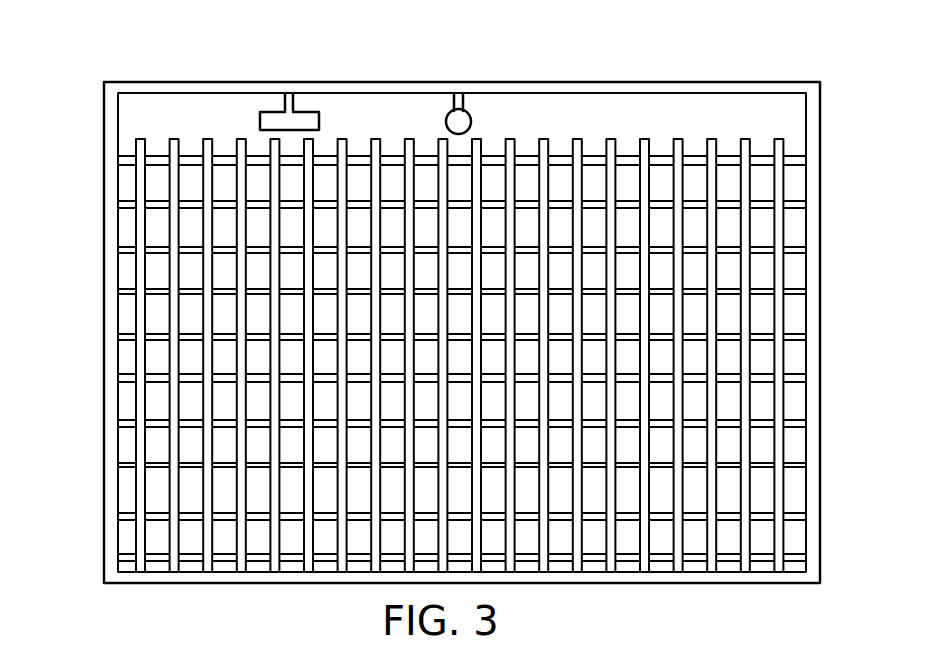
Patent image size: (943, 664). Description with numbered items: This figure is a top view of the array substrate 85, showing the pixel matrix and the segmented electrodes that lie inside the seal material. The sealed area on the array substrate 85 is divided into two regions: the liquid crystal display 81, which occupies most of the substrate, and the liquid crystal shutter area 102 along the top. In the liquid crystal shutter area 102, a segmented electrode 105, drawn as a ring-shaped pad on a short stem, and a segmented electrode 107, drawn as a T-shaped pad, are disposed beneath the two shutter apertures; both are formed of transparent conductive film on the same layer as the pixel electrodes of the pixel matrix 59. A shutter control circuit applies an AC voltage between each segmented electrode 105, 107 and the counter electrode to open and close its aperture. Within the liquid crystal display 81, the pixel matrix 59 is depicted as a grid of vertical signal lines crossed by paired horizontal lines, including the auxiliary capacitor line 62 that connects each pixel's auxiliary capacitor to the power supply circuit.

The array substrate 85 is at (718, 71).
The auxiliary capacitor line 62 is at (812, 287).
The liquid crystal shutter area 102 is at (95, 88).
The segmented electrode 107 is at (303, 121).
The segmented electrode 105 is at (466, 120).
The liquid crystal display 81 is at (96, 165).
The pixel matrix 59 is at (477, 354).